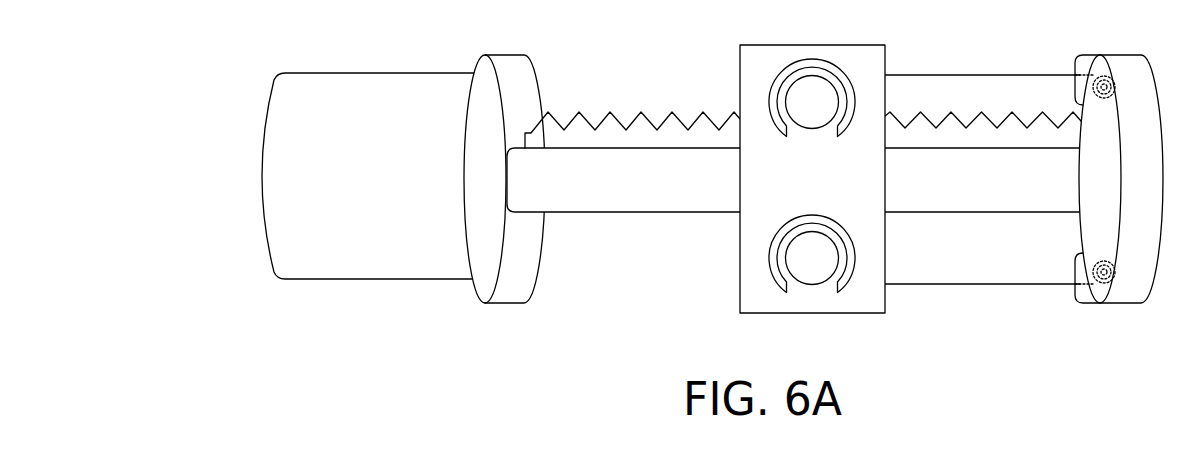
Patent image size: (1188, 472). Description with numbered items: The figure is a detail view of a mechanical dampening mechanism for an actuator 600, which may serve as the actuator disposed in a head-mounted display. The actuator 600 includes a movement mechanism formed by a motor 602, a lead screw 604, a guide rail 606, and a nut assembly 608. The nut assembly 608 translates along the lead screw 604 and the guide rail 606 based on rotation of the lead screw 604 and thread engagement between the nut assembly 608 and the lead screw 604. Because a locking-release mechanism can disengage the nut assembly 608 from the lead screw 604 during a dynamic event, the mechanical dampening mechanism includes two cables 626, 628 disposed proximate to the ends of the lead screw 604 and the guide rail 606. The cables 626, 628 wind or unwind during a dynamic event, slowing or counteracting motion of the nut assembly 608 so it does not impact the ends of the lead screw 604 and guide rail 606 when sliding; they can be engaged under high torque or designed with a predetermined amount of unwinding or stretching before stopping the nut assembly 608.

The actuator 600 is at (645, 181).
The motor 602 is at (337, 75).
The lead screw 604 is at (582, 112).
The guide rail 606 is at (570, 212).
The nut assembly 608 is at (856, 45).
The cable 626 is at (970, 285).
The cable 628 is at (958, 75).